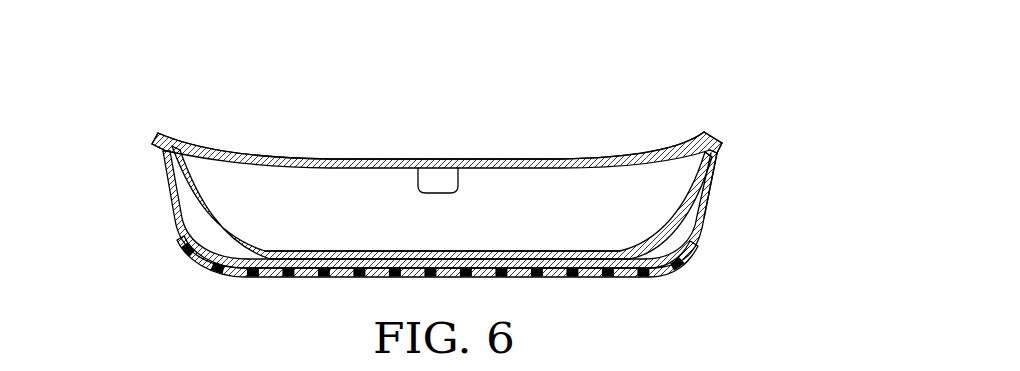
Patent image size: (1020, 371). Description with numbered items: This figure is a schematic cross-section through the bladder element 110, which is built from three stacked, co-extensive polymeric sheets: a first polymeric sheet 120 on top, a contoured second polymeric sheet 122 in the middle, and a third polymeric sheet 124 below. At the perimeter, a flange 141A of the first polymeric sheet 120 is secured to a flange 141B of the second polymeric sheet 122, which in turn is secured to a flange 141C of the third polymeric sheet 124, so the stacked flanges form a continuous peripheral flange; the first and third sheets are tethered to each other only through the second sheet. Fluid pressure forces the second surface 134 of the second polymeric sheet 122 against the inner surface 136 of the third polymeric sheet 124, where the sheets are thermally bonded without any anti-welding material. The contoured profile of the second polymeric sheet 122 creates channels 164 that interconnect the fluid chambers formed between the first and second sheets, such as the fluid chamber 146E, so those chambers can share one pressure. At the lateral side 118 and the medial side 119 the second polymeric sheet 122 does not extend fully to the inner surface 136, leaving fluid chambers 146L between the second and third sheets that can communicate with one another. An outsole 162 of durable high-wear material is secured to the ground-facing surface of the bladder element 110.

The bladder element 110 is at (609, 68).
The lateral side 118 is at (172, 200).
The medial side 119 is at (713, 183).
The first polymeric sheet 120 is at (594, 158).
The second polymeric sheet 122 is at (663, 198).
The third polymeric sheet 124 is at (708, 205).
The second surface 134 is at (284, 258).
The inner surface 136 is at (333, 256).
The flange 141A is at (172, 133).
The flange 141B is at (160, 136).
The flange 141C is at (158, 148).
The fluid chamber 146E is at (238, 192).
The fluid chambers 146L is at (198, 220).
The outsole 162 is at (197, 265).
The channels 164 is at (460, 186).